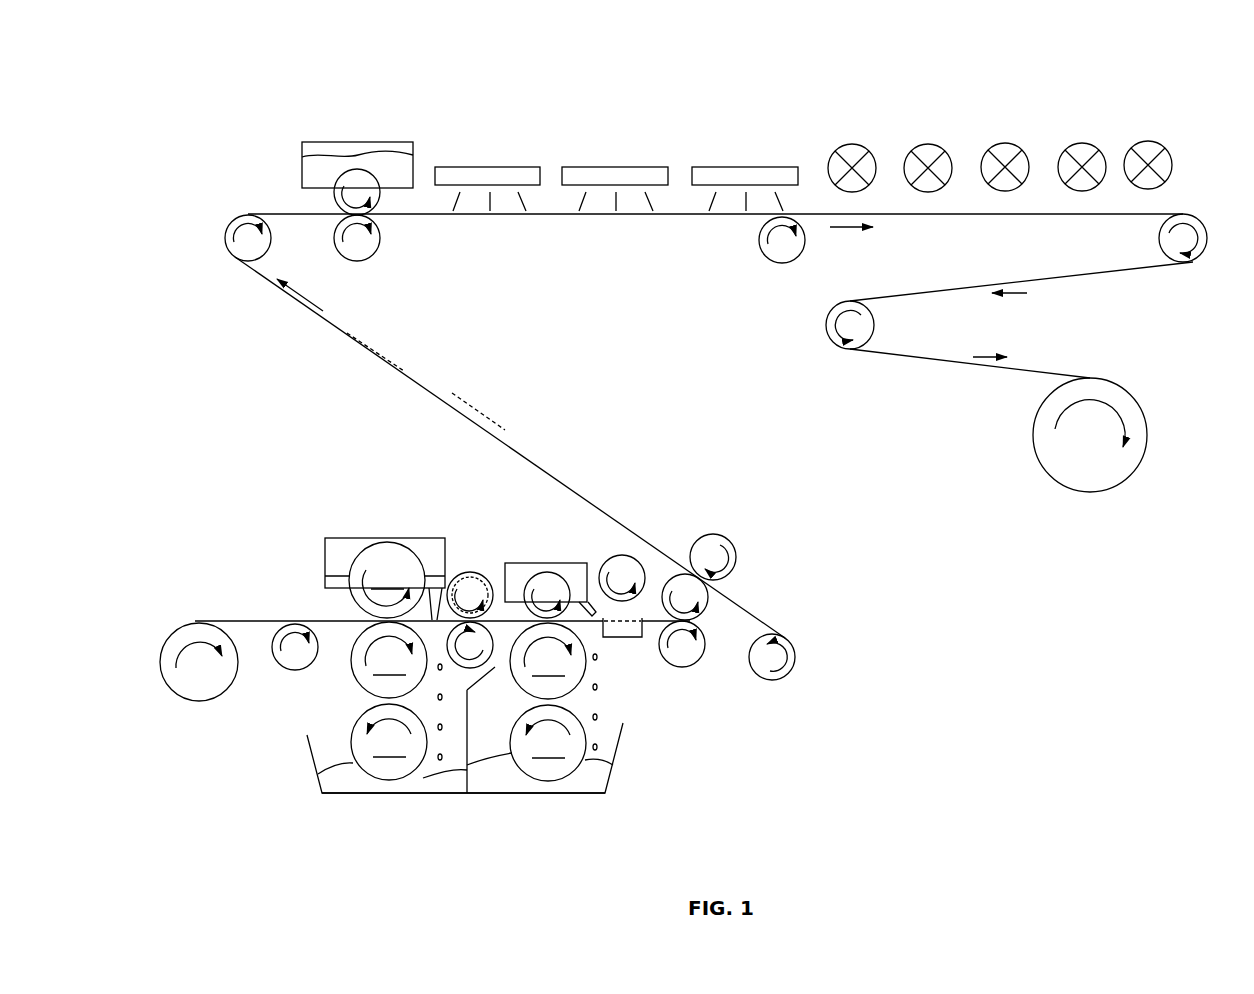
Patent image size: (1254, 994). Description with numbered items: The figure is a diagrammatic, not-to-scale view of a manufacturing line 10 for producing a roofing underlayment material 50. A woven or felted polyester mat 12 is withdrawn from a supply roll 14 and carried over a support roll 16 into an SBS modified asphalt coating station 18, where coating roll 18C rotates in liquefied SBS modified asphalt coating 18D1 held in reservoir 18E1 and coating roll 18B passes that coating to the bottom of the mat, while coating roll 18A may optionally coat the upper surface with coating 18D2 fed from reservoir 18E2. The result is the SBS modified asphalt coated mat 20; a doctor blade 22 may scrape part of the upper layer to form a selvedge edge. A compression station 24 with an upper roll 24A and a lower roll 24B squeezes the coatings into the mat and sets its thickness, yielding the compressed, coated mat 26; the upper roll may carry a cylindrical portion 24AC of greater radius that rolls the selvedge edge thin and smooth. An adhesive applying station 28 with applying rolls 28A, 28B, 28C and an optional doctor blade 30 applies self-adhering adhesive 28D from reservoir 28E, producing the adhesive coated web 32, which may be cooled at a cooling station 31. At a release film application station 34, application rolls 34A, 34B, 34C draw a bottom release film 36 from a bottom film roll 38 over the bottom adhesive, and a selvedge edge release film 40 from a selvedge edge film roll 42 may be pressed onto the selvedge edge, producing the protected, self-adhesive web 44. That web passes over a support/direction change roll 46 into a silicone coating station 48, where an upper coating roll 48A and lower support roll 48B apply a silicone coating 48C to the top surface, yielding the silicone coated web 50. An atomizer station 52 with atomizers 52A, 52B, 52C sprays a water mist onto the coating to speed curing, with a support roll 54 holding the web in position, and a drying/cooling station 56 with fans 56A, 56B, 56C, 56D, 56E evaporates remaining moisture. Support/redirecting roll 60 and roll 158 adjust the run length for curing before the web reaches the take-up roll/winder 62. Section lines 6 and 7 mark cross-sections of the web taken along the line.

The manufacturing line 10 is at (185, 93).
The polyester mat 12 is at (233, 620).
The supply roll 14 is at (198, 688).
The support roll 16 is at (292, 657).
The SBS modified asphalt coating station 18 is at (420, 654).
The coating roll 18A is at (387, 580).
The coating roll 18B is at (389, 660).
The coating roll 18C is at (389, 742).
The SBS modified asphalt coating 18D1 is at (423, 782).
The coating 18D2 is at (335, 583).
The reservoir 18E1 is at (308, 752).
The reservoir 18E2 is at (340, 550).
The SBS modified asphalt coated mat 20 is at (432, 600).
The doctor blade 22 is at (440, 607).
The compression station 24 is at (523, 565).
The upper roll 24A is at (472, 575).
The cylindrical portion 24AC is at (490, 548).
The lower roll 24B is at (488, 651).
The compressed, coated mat 26 is at (513, 590).
The adhesive applying station 28 is at (576, 652).
The applying roll 28A is at (550, 583).
The applying roll 28B is at (548, 661).
The applying roll 28C is at (548, 743).
The self-adhering adhesive 28D is at (523, 782).
The reservoir 28E is at (607, 780).
The doctor blade 30 is at (585, 612).
The cooling station 31 is at (623, 637).
The adhesive coated web 32 is at (648, 637).
The release film application station 34 is at (727, 591).
The application roll 34A is at (718, 542).
The application roll 34B is at (678, 592).
The application roll 34C is at (690, 655).
The bottom release film 36 is at (760, 612).
The bottom film roll 38 is at (802, 660).
The selvedge edge release film 40 is at (647, 610).
The selvedge edge film roll 42 is at (623, 550).
The protected, self-adhesive web 44 is at (588, 604).
The support/direction change roll 46 is at (223, 237).
The silicone coating station 48 is at (336, 173).
The upper coating roll 48A is at (362, 182).
The lower support roll 48B is at (364, 251).
The silicone coating 48C is at (310, 170).
The silicone coated web 50 is at (478, 217).
The atomizer station 52 is at (616, 137).
The atomizer 52A is at (490, 175).
The atomizer 52B is at (646, 175).
The atomizer 52C is at (742, 175).
The support roll 54 is at (775, 262).
The drying/cooling station 56 is at (992, 125).
The fan 56A is at (852, 150).
The fan 56B is at (928, 150).
The fan 56C is at (1005, 149).
The fan 56D is at (1082, 149).
The fan 56E is at (1148, 147).
The support/redirecting roll 60 is at (863, 325).
The take-up roll/winder 62 is at (1115, 395).
The belt end roller 158 is at (1195, 222).
The section line 6 is at (347, 332).
The section line 7 is at (450, 392).